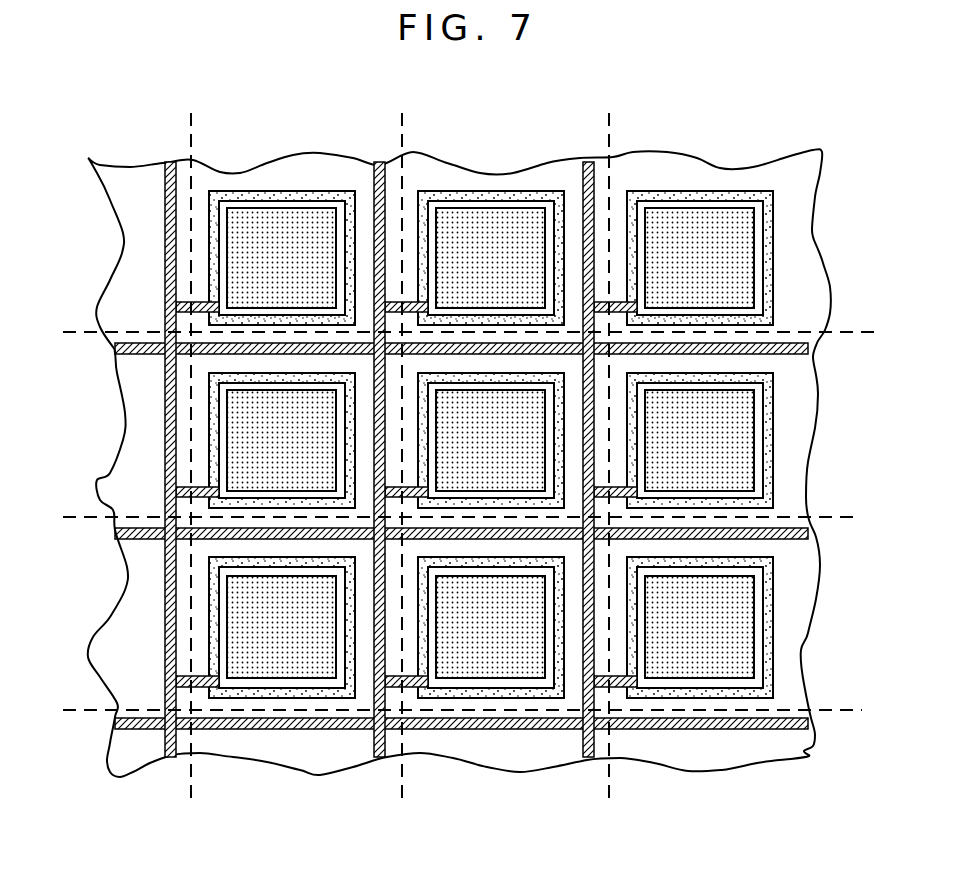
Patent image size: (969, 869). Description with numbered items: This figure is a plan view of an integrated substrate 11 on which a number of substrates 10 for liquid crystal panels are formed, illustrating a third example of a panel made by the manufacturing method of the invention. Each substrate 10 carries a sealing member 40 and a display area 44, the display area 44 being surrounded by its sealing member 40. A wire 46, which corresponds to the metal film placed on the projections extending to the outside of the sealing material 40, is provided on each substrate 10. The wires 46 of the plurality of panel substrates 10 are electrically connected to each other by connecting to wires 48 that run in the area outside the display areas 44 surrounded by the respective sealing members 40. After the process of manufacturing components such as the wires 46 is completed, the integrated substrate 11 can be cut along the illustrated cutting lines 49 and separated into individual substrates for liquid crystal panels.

The substrate 10 is at (789, 171).
The integrated substrate 11 is at (723, 172).
The sealing member 40 is at (772, 240).
The display area 44 is at (737, 278).
The wire 46 is at (617, 302).
The wires 48 is at (813, 349).
The cutting lines 49 is at (453, 442).